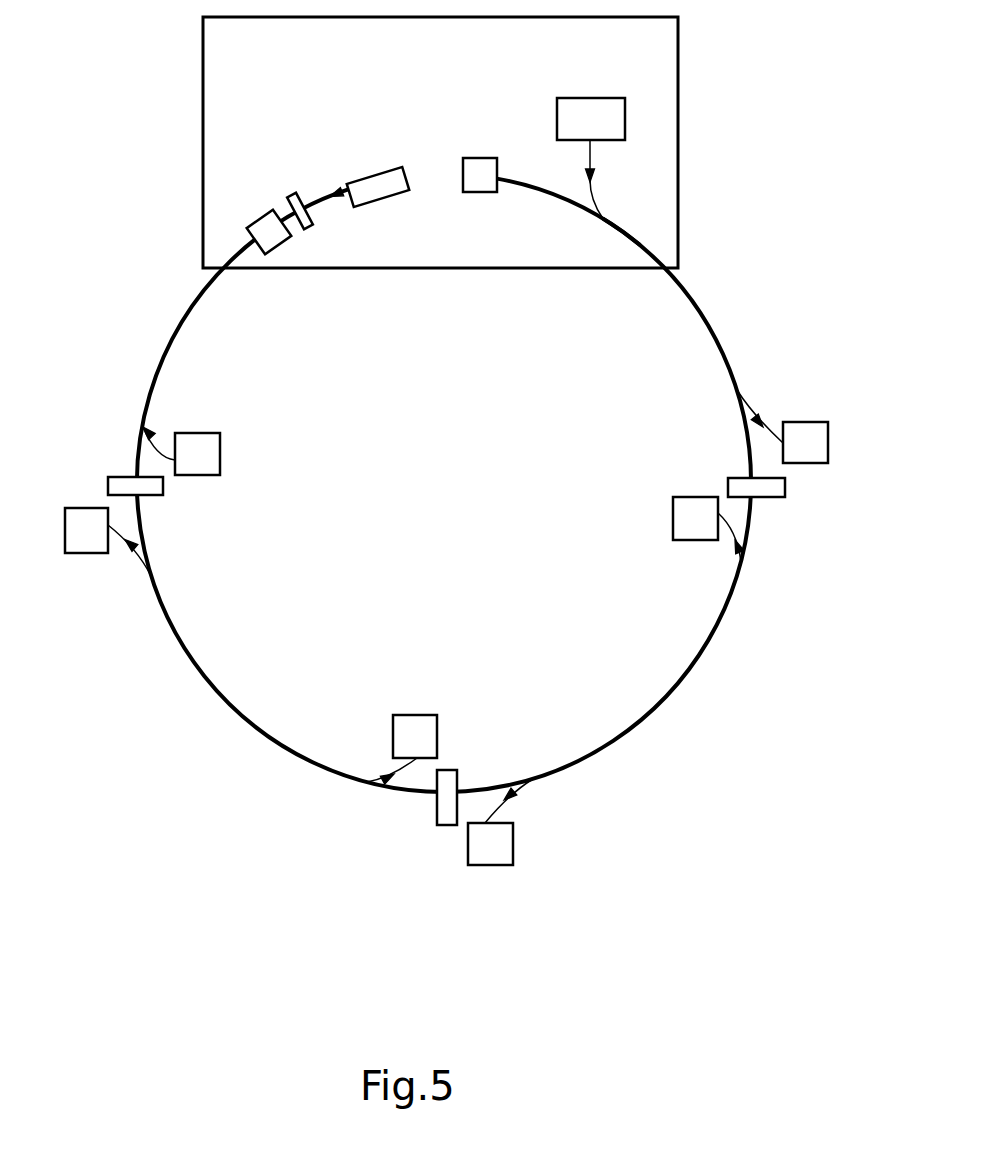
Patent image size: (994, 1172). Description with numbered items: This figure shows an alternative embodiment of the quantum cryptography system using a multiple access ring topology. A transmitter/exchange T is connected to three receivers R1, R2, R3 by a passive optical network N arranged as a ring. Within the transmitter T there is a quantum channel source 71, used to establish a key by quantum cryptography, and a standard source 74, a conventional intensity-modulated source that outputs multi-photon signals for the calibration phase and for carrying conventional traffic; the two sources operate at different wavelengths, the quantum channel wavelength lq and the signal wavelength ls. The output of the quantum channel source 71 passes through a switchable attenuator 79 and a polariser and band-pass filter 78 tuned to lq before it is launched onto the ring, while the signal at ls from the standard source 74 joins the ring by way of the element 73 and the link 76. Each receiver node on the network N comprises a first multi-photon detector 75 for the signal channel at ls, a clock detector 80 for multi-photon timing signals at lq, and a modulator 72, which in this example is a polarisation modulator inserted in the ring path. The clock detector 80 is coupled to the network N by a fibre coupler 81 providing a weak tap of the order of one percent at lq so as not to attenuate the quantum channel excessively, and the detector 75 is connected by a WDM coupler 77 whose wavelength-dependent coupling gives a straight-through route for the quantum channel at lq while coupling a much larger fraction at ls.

The quantum channel source 71 is at (372, 182).
The modulator 72 is at (128, 477).
The transmitter coupler 73 is at (480, 163).
The standard source 74 is at (588, 108).
The first multi-photon detector 75 is at (93, 508).
The transmitter fibre link 76 is at (611, 224).
The WDM coupler 77 is at (154, 585).
The polariser and band-pass filter 78 is at (262, 224).
The switchable attenuator 79 is at (308, 226).
The clock detector 80 is at (220, 468).
The fibre coupler 81 is at (145, 413).
The transmitter/exchange T is at (670, 66).
The passive optical network N is at (669, 696).
The receiver R1 is at (95, 558).
The receiver R2 is at (492, 880).
The receiver R3 is at (808, 473).
The quantum channel wavelength lq is at (317, 182).
The signal wavelength ls is at (605, 179).